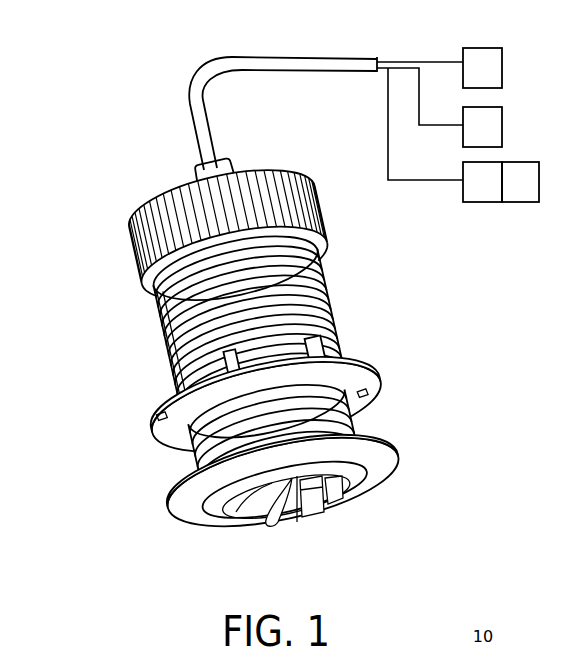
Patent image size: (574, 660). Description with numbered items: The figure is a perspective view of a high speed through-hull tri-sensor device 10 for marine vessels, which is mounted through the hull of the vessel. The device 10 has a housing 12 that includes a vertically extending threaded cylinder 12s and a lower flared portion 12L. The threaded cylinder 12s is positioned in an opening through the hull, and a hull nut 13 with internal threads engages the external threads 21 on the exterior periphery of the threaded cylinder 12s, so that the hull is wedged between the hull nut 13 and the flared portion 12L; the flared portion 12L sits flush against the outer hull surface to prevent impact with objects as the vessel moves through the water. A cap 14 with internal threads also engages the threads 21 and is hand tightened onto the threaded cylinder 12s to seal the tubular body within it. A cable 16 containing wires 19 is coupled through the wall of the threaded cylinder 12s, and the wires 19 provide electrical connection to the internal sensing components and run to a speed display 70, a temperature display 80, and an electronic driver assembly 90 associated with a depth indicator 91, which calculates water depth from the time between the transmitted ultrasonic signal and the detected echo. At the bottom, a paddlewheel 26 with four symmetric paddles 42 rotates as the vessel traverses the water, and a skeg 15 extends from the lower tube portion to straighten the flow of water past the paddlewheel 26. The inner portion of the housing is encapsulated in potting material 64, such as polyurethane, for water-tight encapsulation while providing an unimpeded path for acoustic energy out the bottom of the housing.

The high speed through-hull tri-sensor device 10 is at (106, 254).
The housing 12 is at (319, 279).
The threaded cylinder 12s is at (321, 315).
The lower flared portion 12L is at (169, 502).
The hull nut 13 is at (376, 384).
The cap 14 is at (170, 210).
The skeg 15 is at (278, 526).
The cable 16 is at (206, 76).
The wires 19 is at (403, 60).
The external threads 21 is at (171, 363).
The paddlewheel 26 is at (333, 504).
The paddles 42 is at (313, 514).
The potting material 64 is at (247, 508).
The speed display 70 is at (471, 80).
The temperature display 80 is at (471, 139).
The electronic driver assembly 90 is at (471, 194).
The depth indicator 91 is at (531, 194).